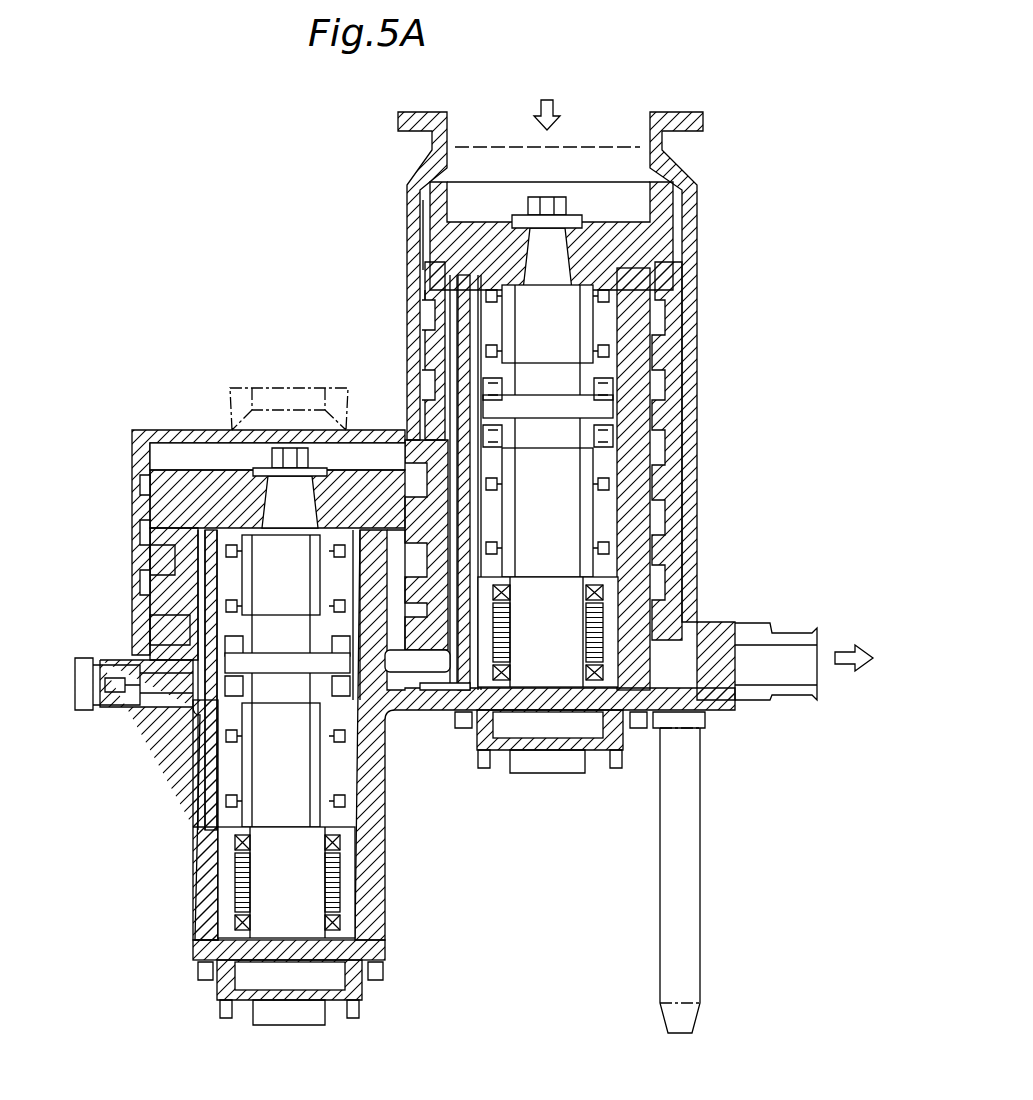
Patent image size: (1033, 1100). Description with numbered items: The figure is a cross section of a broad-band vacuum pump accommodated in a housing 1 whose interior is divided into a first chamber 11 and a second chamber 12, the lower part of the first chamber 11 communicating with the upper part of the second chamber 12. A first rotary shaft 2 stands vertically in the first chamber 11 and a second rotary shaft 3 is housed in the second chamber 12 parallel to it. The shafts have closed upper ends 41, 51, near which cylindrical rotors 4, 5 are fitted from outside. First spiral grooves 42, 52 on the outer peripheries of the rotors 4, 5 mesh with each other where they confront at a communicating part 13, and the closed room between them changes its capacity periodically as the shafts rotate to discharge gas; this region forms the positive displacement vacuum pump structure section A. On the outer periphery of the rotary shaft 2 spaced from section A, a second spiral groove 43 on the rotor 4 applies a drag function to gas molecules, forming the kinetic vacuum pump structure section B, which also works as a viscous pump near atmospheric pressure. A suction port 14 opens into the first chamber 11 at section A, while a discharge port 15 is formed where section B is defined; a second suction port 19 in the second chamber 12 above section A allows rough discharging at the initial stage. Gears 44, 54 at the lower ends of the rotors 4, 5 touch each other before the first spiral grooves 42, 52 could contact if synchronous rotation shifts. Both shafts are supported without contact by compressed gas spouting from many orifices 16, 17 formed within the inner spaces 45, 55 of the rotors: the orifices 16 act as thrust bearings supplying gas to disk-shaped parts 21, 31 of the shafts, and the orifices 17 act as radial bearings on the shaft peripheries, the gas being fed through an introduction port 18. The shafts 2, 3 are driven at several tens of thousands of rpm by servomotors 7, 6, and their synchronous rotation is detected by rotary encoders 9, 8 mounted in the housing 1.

The housing 1 is at (404, 290).
The first rotary shaft 2 is at (566, 519).
The second rotary shaft 3 is at (296, 775).
The cylindrical rotor 4 is at (664, 380).
The cylindrical rotor 5 is at (176, 535).
The servomotor 6 is at (343, 880).
The servomotor 7 is at (603, 648).
The rotary encoder 8 is at (328, 975).
The rotary encoder 9 is at (572, 727).
The first chamber 11 is at (647, 164).
The second chamber 12 is at (188, 453).
The communicating part 13 is at (417, 672).
The suction port 14 is at (583, 128).
The discharge port 15 is at (812, 652).
The orifice 16 is at (608, 356).
The orifice 17 is at (618, 272).
The introduction port 18 is at (78, 685).
The second suction port 19 is at (290, 392).
The disk-shaped part 21 is at (604, 405).
The disk-shaped part 31 is at (226, 650).
The upper end 41 is at (612, 236).
The first spiral groove 42 is at (613, 586).
The second spiral groove 43 is at (432, 246).
The gear 44 is at (750, 645).
The inner space 45 is at (646, 298).
The upper end 51 is at (229, 480).
The first spiral groove 52 is at (156, 530).
The gear 54 is at (162, 632).
The inner space 55 is at (176, 508).
The positive displacement vacuum pump structure section A is at (420, 460).
The kinetic vacuum pump structure section B is at (420, 352).